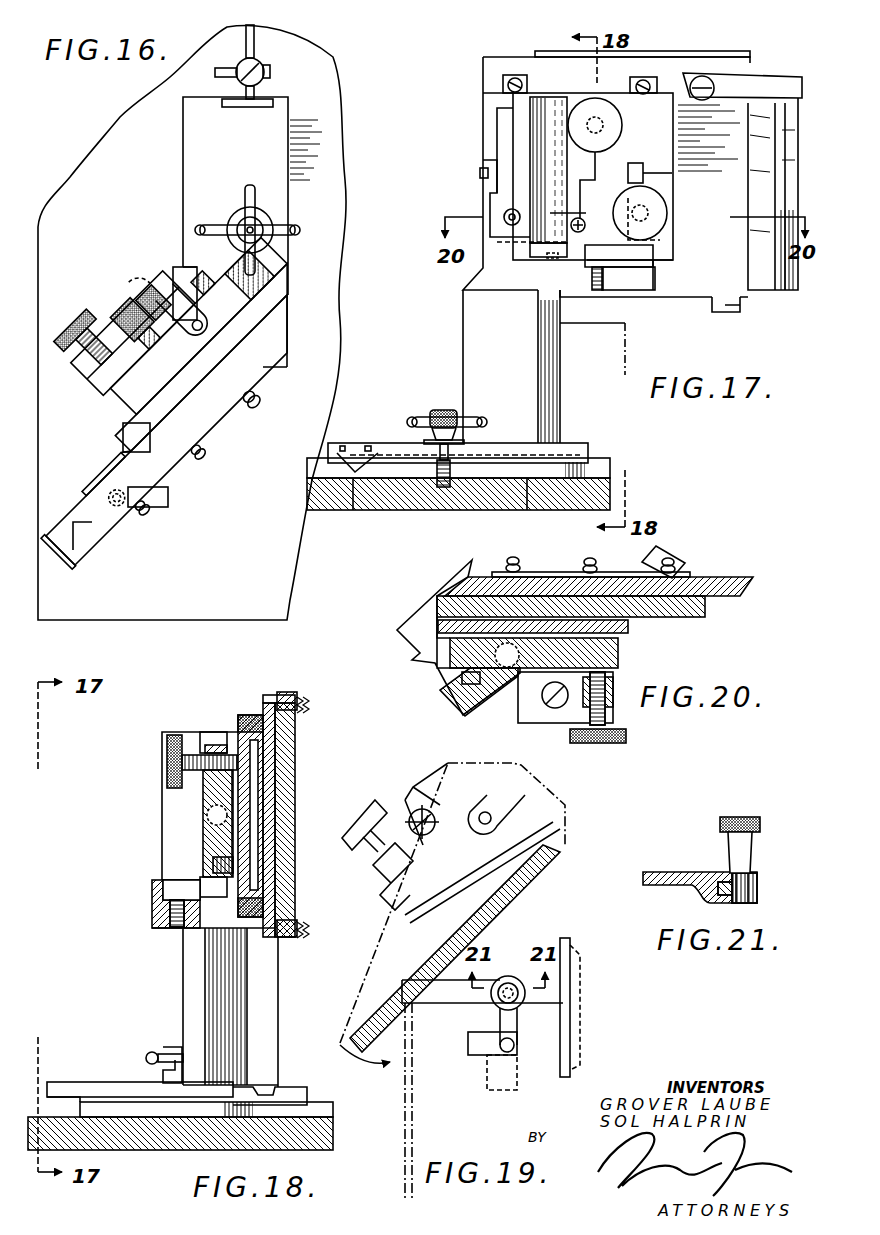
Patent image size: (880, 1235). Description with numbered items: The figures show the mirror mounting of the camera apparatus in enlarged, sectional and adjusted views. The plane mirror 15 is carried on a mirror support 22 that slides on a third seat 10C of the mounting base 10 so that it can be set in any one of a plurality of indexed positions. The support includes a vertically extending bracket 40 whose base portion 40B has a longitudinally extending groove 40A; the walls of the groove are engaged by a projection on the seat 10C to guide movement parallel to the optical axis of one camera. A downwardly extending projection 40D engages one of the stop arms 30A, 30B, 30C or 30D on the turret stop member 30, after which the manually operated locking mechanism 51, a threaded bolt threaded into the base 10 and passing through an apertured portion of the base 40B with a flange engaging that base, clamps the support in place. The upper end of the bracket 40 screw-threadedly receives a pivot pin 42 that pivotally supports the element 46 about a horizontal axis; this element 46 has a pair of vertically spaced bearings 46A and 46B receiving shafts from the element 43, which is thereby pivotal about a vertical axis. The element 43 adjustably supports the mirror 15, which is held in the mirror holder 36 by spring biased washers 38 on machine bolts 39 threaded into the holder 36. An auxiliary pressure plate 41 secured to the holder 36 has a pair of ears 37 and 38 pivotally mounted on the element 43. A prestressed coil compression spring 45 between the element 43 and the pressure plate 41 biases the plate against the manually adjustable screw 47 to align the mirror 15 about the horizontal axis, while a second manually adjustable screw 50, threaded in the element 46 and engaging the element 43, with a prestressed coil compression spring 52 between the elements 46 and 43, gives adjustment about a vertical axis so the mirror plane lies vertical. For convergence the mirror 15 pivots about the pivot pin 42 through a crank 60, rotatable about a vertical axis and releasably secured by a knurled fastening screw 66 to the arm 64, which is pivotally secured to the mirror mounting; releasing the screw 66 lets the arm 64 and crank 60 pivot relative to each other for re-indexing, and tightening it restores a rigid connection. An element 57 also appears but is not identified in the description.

In FIG. 17, the mounting base 10 is at (470, 500).
In FIG. 18, the mounting base 10 is at (138, 1135).
In FIG. 17, the third seat 10C is at (528, 500).
In FIG. 18, the third seat 10C is at (333, 1110).
In FIG. 16, the plane mirror 15 is at (100, 541).
In FIG. 17, the plane mirror 15 is at (766, 292).
In FIG. 20, the plane mirror 15 is at (748, 596).
In FIG. 18, the plane mirror 15 is at (298, 885).
In FIG. 19, the plane mirror 15 is at (548, 876).
In FIG. 16, the mirror support 22 is at (295, 297).
In FIG. 17, the mirror support 22 is at (460, 343).
In FIG. 20, the mirror support 22 is at (410, 606).
In FIG. 18, the mirror support 22 is at (282, 1003).
In FIG. 16, the turret stop member 30 is at (264, 66).
In FIG. 16, the stop arm 30A is at (254, 40).
In FIG. 16, the stop arm 30B is at (224, 67).
In FIG. 16, the stop arm 30C is at (255, 90).
In FIG. 16, the stop arm 30D is at (271, 71).
In FIG. 16, the mirror holder 36 is at (173, 455).
In FIG. 17, the mirror holder 36 is at (750, 63).
In FIG. 20, the mirror holder 36 is at (705, 612).
In FIG. 18, the mirror holder 36 is at (268, 697).
In FIG. 17, the ear 37 is at (480, 170).
In FIG. 16, the spring biased washer 38 is at (134, 396).
In FIG. 17, the spring biased washer 38 is at (628, 166).
In FIG. 20, the spring biased washer 38 is at (688, 572).
In FIG. 18, the spring biased washer 38 is at (292, 694).
In FIG. 16, the machine bolt 39 is at (205, 450).
In FIG. 20, the machine bolt 39 is at (675, 560).
In FIG. 18, the machine bolt 39 is at (312, 701).
In FIG. 17, the vertically extending bracket 40 is at (640, 284).
In FIG. 20, the vertically extending bracket 40 is at (463, 703).
In FIG. 18, the vertically extending bracket 40 is at (183, 1017).
In FIG. 18, the longitudinally extending groove 40A is at (278, 1100).
In FIG. 16, the base portion 40B is at (195, 156).
In FIG. 17, the base portion 40B is at (578, 443).
In FIG. 18, the base portion 40B is at (83, 1082).
In FIG. 16, the downwardly extending projection 40D is at (233, 107).
In FIG. 17, the downwardly extending projection 40D is at (356, 476).
In FIG. 16, the auxiliary pressure plate 41 is at (195, 390).
In FIG. 17, the auxiliary pressure plate 41 is at (660, 100).
In FIG. 20, the auxiliary pressure plate 41 is at (628, 631).
In FIG. 18, the auxiliary pressure plate 41 is at (255, 760).
In FIG. 16, the pivot pin 42 is at (119, 316).
In FIG. 17, the pivot pin 42 is at (618, 255).
In FIG. 20, the pivot pin 42 is at (555, 708).
In FIG. 18, the pivot pin 42 is at (168, 880).
In FIG. 19, the pivot pin 42 is at (415, 812).
In FIG. 16, the element 43 is at (198, 326).
In FIG. 17, the element 43 is at (625, 147).
In FIG. 20, the element 43 is at (618, 656).
In FIG. 18, the element 43 is at (203, 792).
In FIG. 16, the prestressed coil compression spring 45 is at (163, 275).
In FIG. 17, the prestressed coil compression spring 45 is at (581, 220).
In FIG. 18, the prestressed coil compression spring 45 is at (235, 864).
In FIG. 16, the element 46 is at (151, 280).
In FIG. 17, the element 46 is at (652, 268).
In FIG. 20, the element 46 is at (526, 705).
In FIG. 18, the element 46 is at (152, 890).
In FIG. 16, the bearing 46A is at (244, 398).
In FIG. 18, the bearing 46A is at (207, 732).
In FIG. 17, the bearing 46B is at (537, 252).
In FIG. 18, the bearing 46B is at (200, 880).
In FIG. 16, the manually adjustable screw 47 is at (141, 300).
In FIG. 17, the manually adjustable screw 47 is at (613, 125).
In FIG. 18, the manually adjustable screw 47 is at (167, 747).
In FIG. 16, the manually adjustable screw 50 is at (68, 328).
In FIG. 17, the manually adjustable screw 50 is at (666, 208).
In FIG. 20, the manually adjustable screw 50 is at (627, 738).
In FIG. 16, the locking mechanism 51 is at (226, 205).
In FIG. 17, the locking mechanism 51 is at (434, 408).
In FIG. 18, the locking mechanism 51 is at (145, 1053).
In FIG. 16, the prestressed coil compression spring 52 is at (202, 280).
In FIG. 17, the prestressed coil compression spring 52 is at (497, 207).
In FIG. 20, the prestressed coil compression spring 52 is at (465, 680).
In FIG. 16, the pivot 57 is at (253, 286).
In FIG. 18, the pivot 57 is at (232, 805).
In FIG. 19, the crank 60 is at (498, 1072).
In FIG. 21, the crank 60 is at (760, 887).
In FIG. 17, the arm 64 is at (712, 312).
In FIG. 19, the arm 64 is at (448, 995).
In FIG. 21, the arm 64 is at (660, 876).
In FIG. 19, the knurled fastening screw 66 is at (507, 977).
In FIG. 21, the knurled fastening screw 66 is at (730, 849).